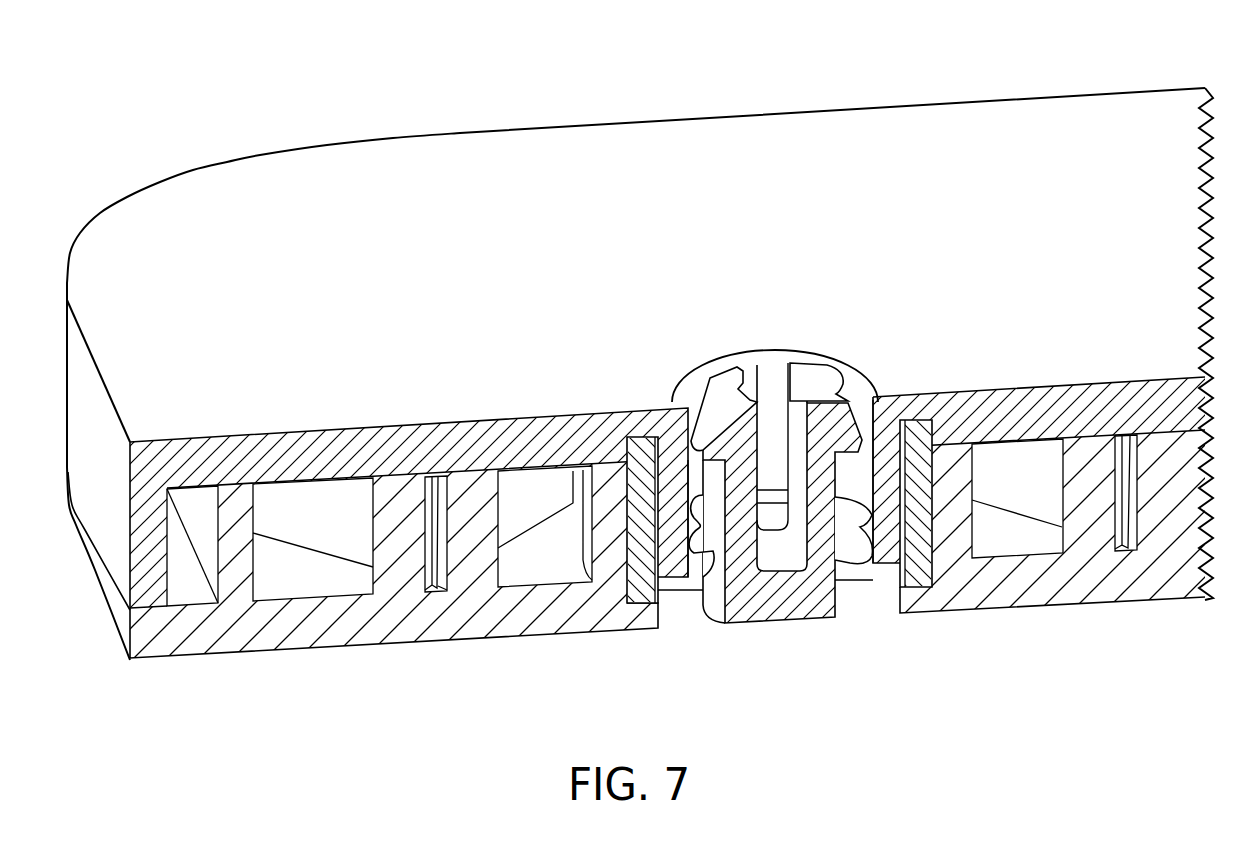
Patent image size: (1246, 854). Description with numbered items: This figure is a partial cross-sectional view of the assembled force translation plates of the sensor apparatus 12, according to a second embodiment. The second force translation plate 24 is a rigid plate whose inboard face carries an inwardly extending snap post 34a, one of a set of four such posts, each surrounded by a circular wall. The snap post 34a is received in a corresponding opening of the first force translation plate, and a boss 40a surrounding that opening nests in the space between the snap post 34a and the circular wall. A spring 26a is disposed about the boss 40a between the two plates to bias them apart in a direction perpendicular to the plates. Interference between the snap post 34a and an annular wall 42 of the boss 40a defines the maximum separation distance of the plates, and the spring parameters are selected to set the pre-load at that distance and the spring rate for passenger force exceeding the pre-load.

The sensor apparatus 12 is at (212, 103).
The second force translation plate 24 is at (388, 625).
The spring 26a is at (920, 547).
The snap post 34a is at (722, 382).
The boss 40a is at (680, 565).
The annular wall 42 is at (868, 558).